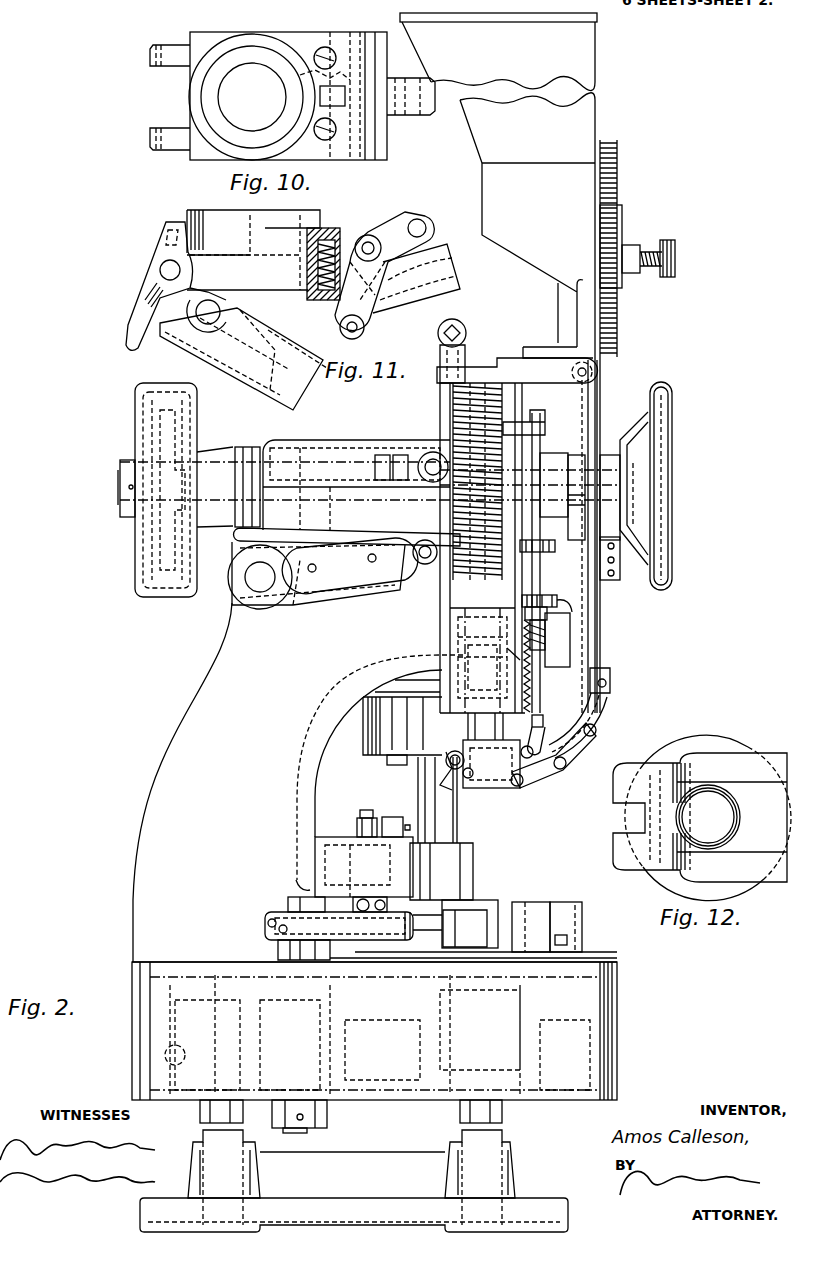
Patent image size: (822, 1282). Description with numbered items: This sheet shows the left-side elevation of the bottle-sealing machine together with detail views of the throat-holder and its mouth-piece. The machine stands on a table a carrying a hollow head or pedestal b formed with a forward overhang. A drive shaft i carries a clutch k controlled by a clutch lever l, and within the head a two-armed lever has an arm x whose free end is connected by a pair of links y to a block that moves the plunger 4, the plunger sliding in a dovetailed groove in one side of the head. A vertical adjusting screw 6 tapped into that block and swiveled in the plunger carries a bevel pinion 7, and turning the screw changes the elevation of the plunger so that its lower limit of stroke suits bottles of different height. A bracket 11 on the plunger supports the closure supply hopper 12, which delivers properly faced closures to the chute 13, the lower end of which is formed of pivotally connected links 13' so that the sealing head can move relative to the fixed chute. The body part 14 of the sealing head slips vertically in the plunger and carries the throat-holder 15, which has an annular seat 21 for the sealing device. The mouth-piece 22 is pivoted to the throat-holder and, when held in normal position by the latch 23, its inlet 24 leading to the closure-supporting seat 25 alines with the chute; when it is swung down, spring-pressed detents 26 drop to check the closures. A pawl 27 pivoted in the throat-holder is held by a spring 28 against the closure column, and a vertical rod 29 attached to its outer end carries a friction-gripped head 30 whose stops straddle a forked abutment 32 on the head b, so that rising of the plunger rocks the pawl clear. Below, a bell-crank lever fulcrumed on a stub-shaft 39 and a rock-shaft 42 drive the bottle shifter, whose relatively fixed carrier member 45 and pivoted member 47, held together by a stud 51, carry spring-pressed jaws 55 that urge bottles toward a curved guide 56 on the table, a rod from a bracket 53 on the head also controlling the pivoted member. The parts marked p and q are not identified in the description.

In FIG. 2, the plunger 4 is at (507, 648).
In FIG. 2, the vertical adjusting screw 6 is at (440, 422).
In FIG. 2, the bevel pinion 7 is at (468, 340).
In FIG. 2, the bracket 11 is at (552, 372).
In FIG. 2, the closure supply hopper 12 is at (590, 125).
In FIG. 2, the chute 13 is at (628, 426).
In FIG. 11, the pivotally connected links 13' is at (416, 290).
In FIG. 2, the pivotally connected links 13' is at (610, 570).
In FIG. 2, the body part of the sealing head 14 is at (468, 728).
In FIG. 10, the throat-holder 15 is at (352, 145).
In FIG. 11, the throat-holder 15 is at (286, 280).
In FIG. 2, the throat-holder 15 is at (508, 748).
In FIG. 10, the annular seat 21 is at (229, 126).
In FIG. 11, the mouth-piece 22 is at (245, 349).
In FIG. 12, the mouth-piece 22 is at (740, 752).
In FIG. 2, the mouth-piece 22 is at (497, 785).
In FIG. 11, the latch 23 is at (135, 325).
In FIG. 2, the latch 23 is at (450, 772).
In FIG. 12, the inlet 24 is at (700, 817).
In FIG. 12, the closure-supporting seat 25 is at (706, 790).
In FIG. 11, the spring-pressed detents 26 is at (318, 300).
In FIG. 10, the pawl 27 is at (400, 110).
In FIG. 11, the pawl 27 is at (388, 230).
In FIG. 2, the pawl 27 is at (533, 772).
In FIG. 2, the spring 28 is at (540, 705).
In FIG. 2, the vertical rod 29 is at (592, 686).
In FIG. 2, the head 30 is at (562, 595).
In FIG. 2, the forked abutment 32 is at (558, 602).
In FIG. 2, the stub-shaft 39 is at (305, 1130).
In FIG. 2, the rock-shaft 42 is at (307, 892).
In FIG. 2, the fixed member of the carrier 45 is at (347, 933).
In FIG. 2, the pivoted member of the carrier 47 is at (307, 910).
In FIG. 2, the stud 51 is at (358, 897).
In FIG. 2, the bracket 53 is at (364, 853).
In FIG. 2, the jaws 55 is at (487, 912).
In FIG. 2, the guide 56 is at (537, 912).
In FIG. 2, the table a is at (618, 975).
In FIG. 2, the hollow head or pedestal b is at (563, 655).
In FIG. 2, the drive shaft i is at (120, 483).
In FIG. 2, the clutch k is at (238, 455).
In FIG. 2, the clutch controlling lever l is at (342, 537).
In FIG. 2, the block p is at (470, 886).
In FIG. 2, the bed plate q is at (348, 958).
In FIG. 2, the arm of the two-armed lever x is at (382, 568).
In FIG. 2, the pair of links y is at (415, 512).